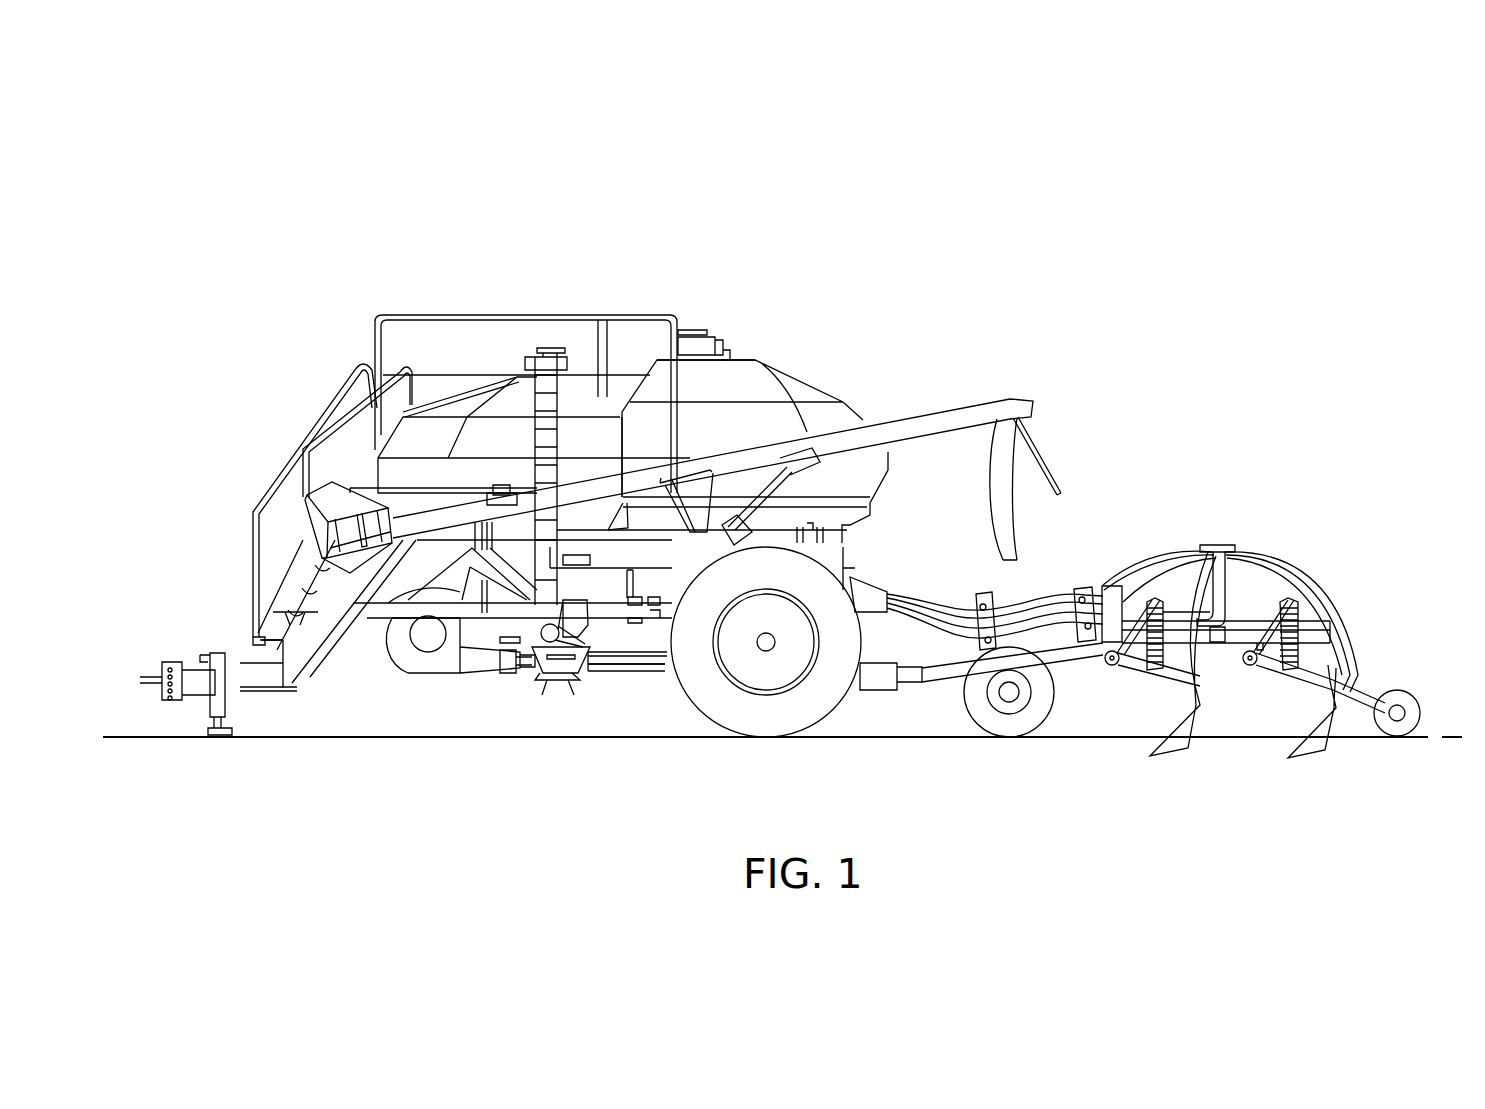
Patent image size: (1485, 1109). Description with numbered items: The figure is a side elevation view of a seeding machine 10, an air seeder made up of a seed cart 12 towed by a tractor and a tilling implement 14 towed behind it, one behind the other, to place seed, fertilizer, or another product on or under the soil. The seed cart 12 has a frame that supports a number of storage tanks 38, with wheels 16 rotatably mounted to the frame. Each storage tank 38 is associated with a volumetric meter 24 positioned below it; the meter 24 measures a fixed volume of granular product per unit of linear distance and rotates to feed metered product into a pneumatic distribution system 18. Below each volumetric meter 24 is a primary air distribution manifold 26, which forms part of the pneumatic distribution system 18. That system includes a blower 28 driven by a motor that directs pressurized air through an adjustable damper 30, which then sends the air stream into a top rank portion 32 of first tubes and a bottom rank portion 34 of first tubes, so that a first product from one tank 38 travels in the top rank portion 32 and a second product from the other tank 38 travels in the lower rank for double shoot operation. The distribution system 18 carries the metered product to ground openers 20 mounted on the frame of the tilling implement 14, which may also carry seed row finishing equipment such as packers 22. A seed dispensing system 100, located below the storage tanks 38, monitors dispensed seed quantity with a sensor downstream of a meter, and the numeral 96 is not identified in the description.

The seeding machine 10 is at (858, 215).
The seed cart 12 is at (850, 350).
The tilling implement 14 is at (1190, 495).
The wheels 16 is at (816, 687).
The pneumatic distribution system 18 is at (592, 688).
The ground openers 20 is at (1170, 750).
The packers 22 is at (1400, 693).
The volumetric meter 24 is at (648, 662).
The primary air distribution manifold 26 is at (557, 672).
The blower 28 is at (412, 660).
The adjustable damper 30 is at (470, 665).
The top rank portion of first tubes 32 is at (625, 650).
The bottom rank portion of first tubes 34 is at (938, 612).
The storage tanks 38 is at (591, 437).
The sensor / controller 96 is at (655, 612).
The seed dispensing system 100 is at (522, 700).